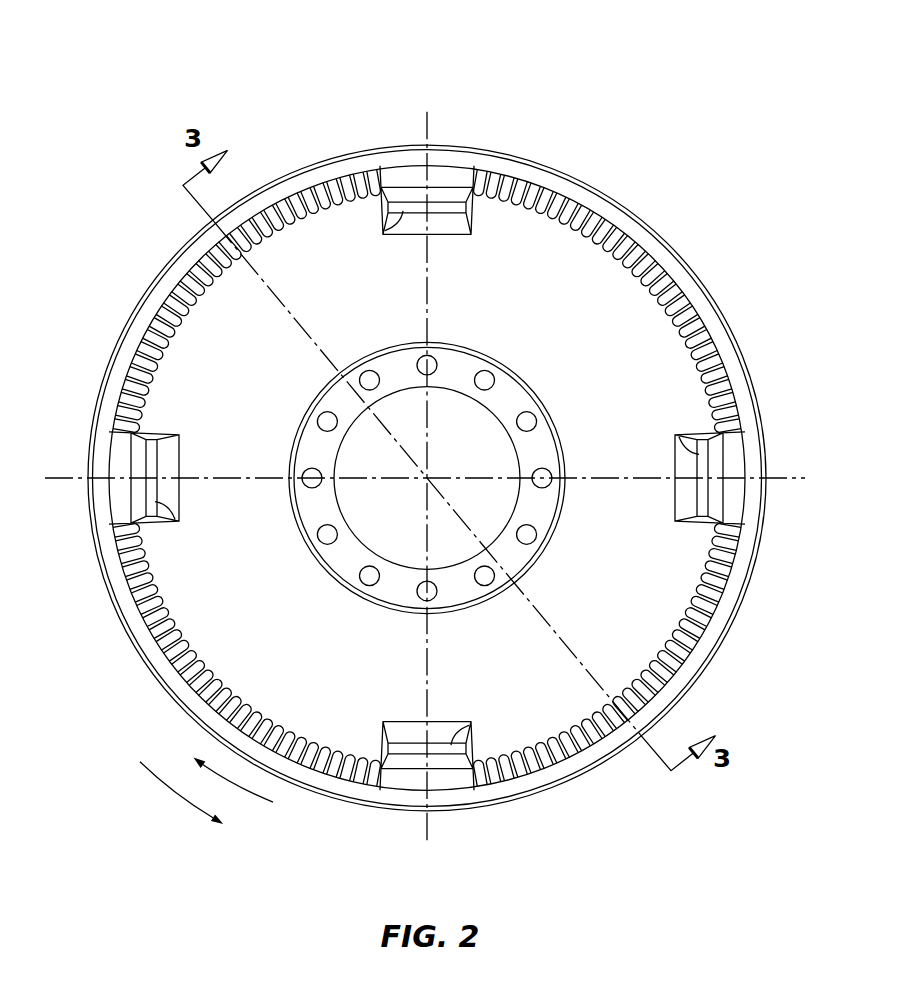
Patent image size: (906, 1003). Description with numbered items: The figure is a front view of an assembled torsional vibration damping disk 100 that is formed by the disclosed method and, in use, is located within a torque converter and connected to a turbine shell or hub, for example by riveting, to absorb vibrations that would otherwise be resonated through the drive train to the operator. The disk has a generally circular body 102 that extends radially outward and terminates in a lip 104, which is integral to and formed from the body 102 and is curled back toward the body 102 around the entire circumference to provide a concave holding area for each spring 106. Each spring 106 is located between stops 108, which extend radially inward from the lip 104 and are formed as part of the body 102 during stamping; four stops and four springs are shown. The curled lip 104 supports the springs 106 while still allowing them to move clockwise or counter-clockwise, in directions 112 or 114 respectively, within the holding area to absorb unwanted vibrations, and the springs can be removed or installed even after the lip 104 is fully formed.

The assembled torsional vibration damping disk 100 is at (425, 427).
The body 102 is at (397, 478).
The lip 104 is at (449, 478).
The spring 106 is at (403, 465).
The stops 108 is at (425, 474).
The clockwise direction 112 is at (234, 819).
The counter-clockwise direction 114 is at (155, 802).